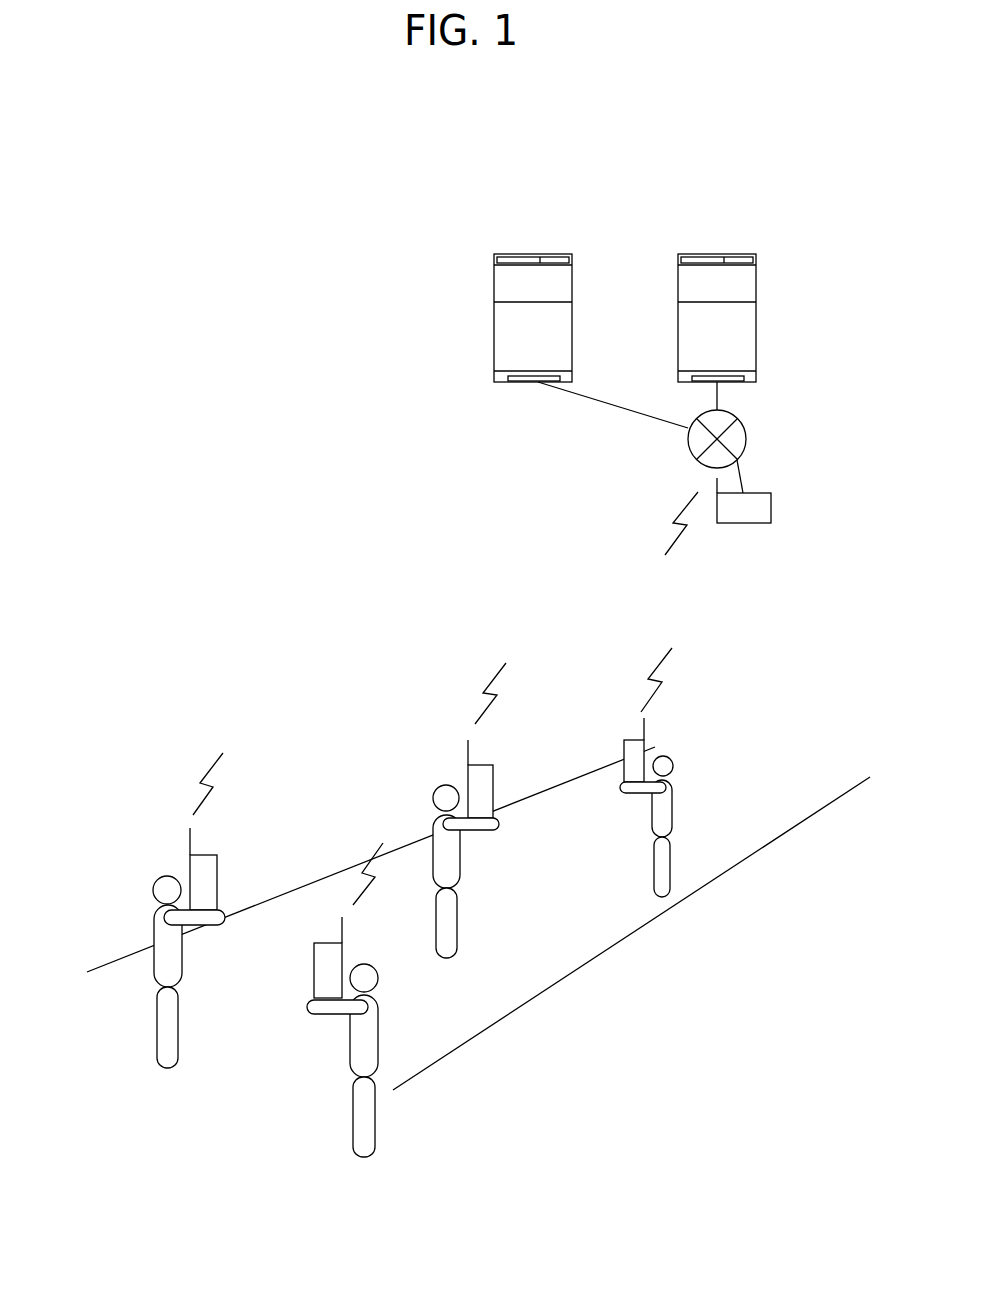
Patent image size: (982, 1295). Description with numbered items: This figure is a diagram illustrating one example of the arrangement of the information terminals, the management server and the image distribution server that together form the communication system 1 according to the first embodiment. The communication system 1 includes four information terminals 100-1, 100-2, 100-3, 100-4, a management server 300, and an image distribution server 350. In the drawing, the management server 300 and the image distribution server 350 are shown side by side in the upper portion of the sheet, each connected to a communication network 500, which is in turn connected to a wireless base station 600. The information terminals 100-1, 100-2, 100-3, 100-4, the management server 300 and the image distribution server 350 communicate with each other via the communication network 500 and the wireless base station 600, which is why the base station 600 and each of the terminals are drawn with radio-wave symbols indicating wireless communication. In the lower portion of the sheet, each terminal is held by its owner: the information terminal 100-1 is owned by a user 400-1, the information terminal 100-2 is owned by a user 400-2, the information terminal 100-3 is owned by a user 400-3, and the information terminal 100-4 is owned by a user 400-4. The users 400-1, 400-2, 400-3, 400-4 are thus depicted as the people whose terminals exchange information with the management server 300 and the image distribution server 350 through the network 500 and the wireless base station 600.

The communication system 1 is at (391, 178).
The image distribution server 350 is at (567, 282).
The management server 300 is at (750, 282).
The communication network 500 is at (747, 433).
The wireless base station 600 is at (772, 507).
The information terminal 100-1 is at (637, 738).
The information terminal 100-2 is at (494, 793).
The information terminal 100-3 is at (330, 943).
The information terminal 100-4 is at (205, 850).
The user 400-1 is at (667, 852).
The user 400-2 is at (453, 868).
The user 400-3 is at (357, 1040).
The user 400-4 is at (157, 972).